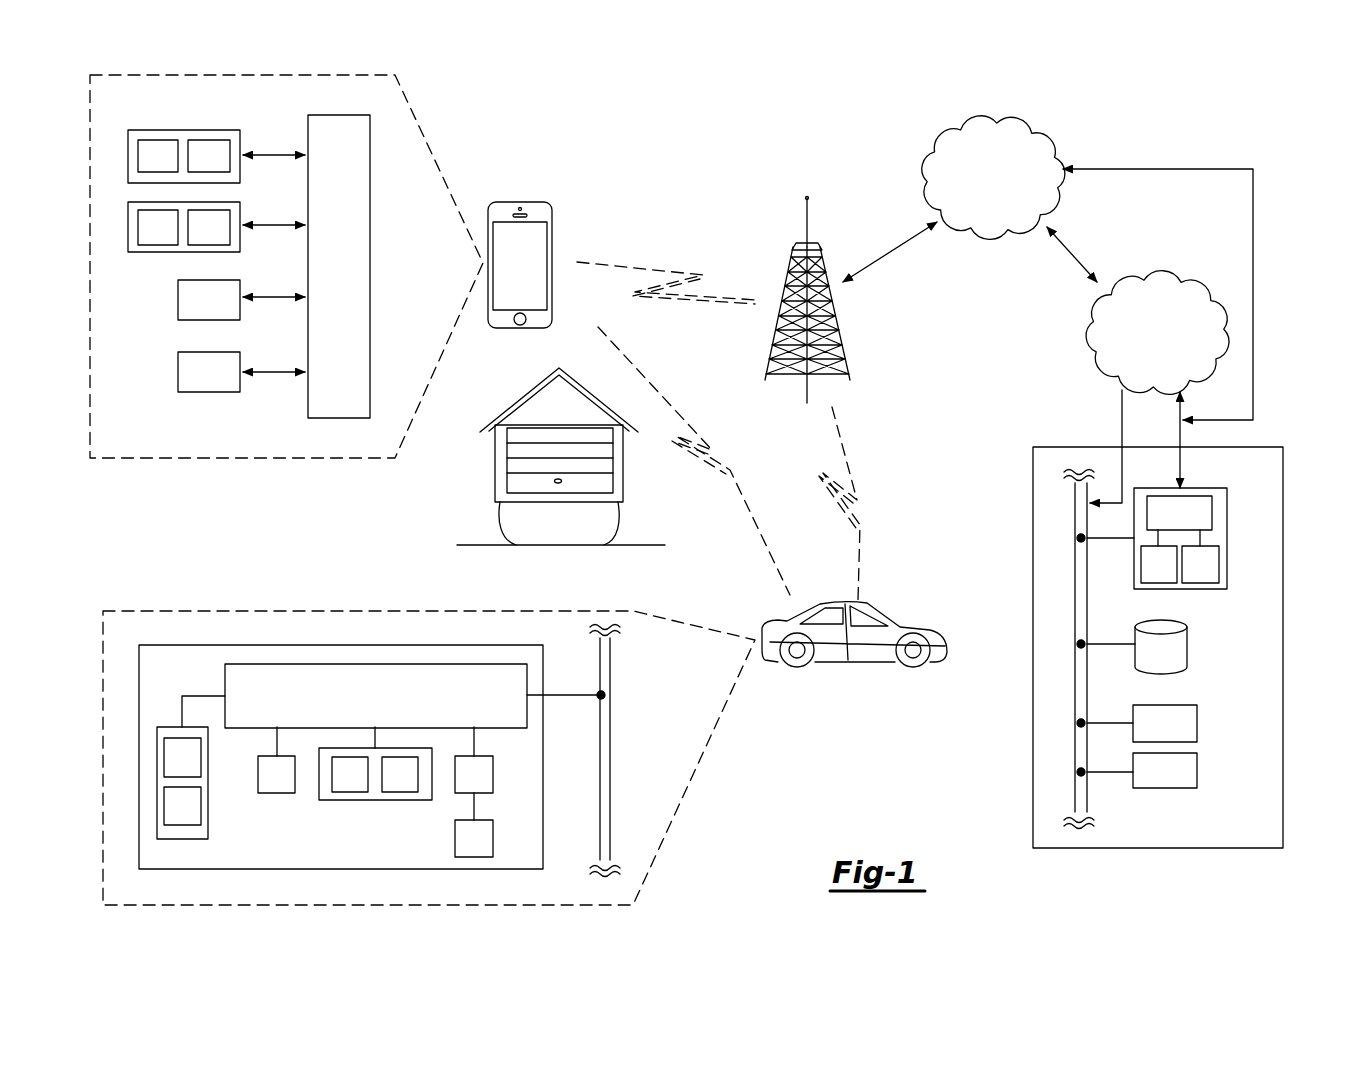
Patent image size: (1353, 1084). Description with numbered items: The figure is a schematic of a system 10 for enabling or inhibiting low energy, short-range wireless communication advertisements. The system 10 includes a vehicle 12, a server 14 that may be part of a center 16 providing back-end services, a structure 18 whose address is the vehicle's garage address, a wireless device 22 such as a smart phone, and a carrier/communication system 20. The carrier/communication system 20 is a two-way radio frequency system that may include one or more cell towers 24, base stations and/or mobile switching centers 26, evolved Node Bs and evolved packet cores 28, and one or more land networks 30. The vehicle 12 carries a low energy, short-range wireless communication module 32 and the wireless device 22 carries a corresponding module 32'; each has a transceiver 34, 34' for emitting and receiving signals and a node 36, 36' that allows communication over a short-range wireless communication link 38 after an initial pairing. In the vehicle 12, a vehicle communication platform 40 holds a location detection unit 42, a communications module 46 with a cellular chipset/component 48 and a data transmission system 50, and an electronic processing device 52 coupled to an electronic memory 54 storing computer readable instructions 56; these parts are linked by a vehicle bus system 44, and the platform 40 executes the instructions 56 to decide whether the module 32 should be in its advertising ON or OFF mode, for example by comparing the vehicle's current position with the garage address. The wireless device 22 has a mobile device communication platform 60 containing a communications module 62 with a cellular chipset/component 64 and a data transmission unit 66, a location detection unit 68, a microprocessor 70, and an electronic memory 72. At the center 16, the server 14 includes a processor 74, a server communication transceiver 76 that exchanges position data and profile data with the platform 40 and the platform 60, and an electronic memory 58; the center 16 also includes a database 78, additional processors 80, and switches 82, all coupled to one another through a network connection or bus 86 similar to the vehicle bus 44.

The system 10 is at (1216, 133).
The vehicle 12 is at (848, 603).
The server 14 is at (1206, 538).
The center 16 is at (1283, 648).
The structure 18 is at (495, 477).
The carrier/communication system 20 is at (855, 158).
The wireless device 22 is at (520, 202).
The cell tower 24 is at (822, 262).
The base stations and/or mobile switching centers 26 is at (993, 177).
The evolved Node Bs and evolved packet cores 28 is at (1011, 189).
The land network 30 is at (1166, 346).
The low energy, short-range wireless communication module 32 is at (211, 783).
The low energy, short-range wireless communication module 32' is at (184, 137).
The transceiver 34 is at (182, 757).
The transceiver 34' is at (158, 156).
The node 36 is at (182, 806).
The node 36' is at (209, 156).
The short-range wireless communication link 38 is at (703, 440).
The vehicle communication platform 40 is at (375, 664).
The location detection unit 42 is at (285, 786).
The vehicle bus system 44 is at (612, 758).
The communications module 46 is at (375, 790).
The cellular chipset/component 48 is at (358, 787).
The data transmission system 50 is at (408, 787).
The electronic processing device 52 is at (383, 707).
The electronic memory 54 is at (482, 786).
The computer readable instructions 56 is at (482, 850).
The electronic memory 58 is at (1208, 576).
The mobile device communication platform 60 is at (230, 458).
The communications module 62 is at (183, 259).
The cellular chipset/component 64 is at (166, 239).
The data transmission unit 66 is at (217, 239).
The location detection unit 68 is at (217, 311).
The microprocessor 70 is at (346, 278).
The electronic memory 72 is at (217, 383).
The processor 74 is at (1188, 524).
The server communication transceiver 76 is at (1167, 576).
The database 78 is at (1188, 645).
The additional processor 80 is at (1173, 735).
The switch 82 is at (1173, 782).
The server bus 86 is at (1087, 692).